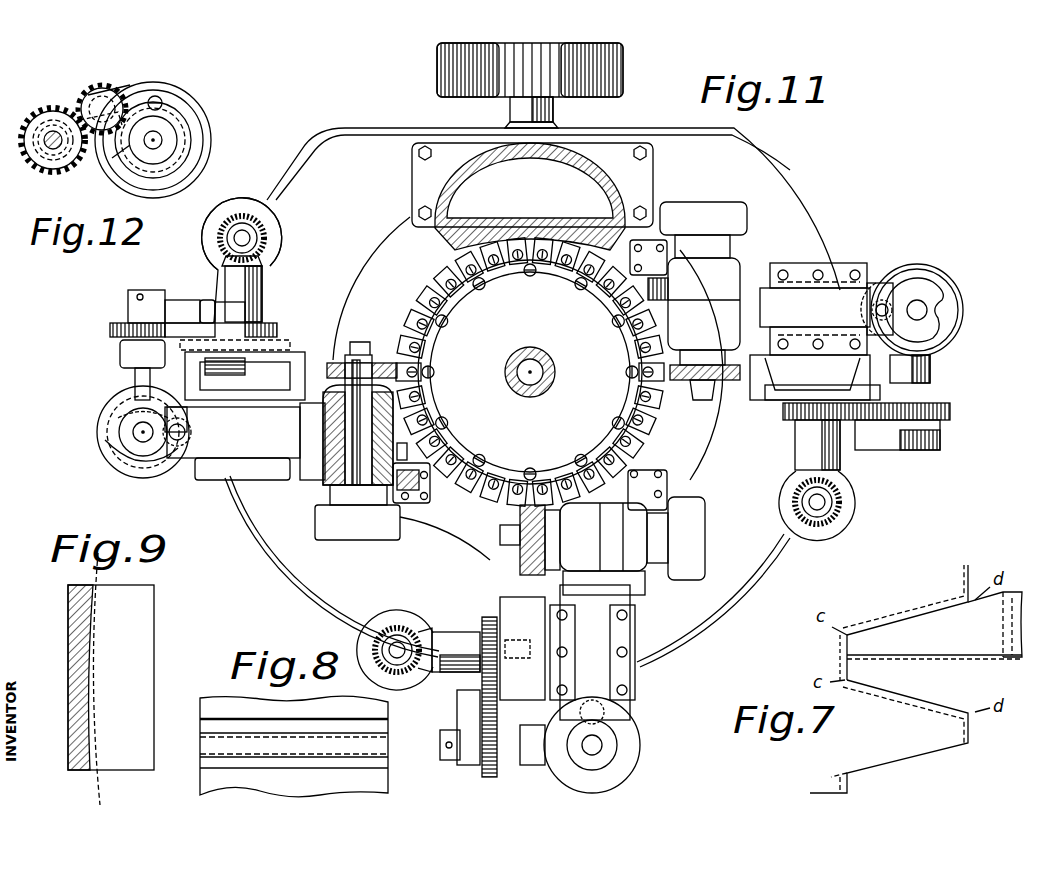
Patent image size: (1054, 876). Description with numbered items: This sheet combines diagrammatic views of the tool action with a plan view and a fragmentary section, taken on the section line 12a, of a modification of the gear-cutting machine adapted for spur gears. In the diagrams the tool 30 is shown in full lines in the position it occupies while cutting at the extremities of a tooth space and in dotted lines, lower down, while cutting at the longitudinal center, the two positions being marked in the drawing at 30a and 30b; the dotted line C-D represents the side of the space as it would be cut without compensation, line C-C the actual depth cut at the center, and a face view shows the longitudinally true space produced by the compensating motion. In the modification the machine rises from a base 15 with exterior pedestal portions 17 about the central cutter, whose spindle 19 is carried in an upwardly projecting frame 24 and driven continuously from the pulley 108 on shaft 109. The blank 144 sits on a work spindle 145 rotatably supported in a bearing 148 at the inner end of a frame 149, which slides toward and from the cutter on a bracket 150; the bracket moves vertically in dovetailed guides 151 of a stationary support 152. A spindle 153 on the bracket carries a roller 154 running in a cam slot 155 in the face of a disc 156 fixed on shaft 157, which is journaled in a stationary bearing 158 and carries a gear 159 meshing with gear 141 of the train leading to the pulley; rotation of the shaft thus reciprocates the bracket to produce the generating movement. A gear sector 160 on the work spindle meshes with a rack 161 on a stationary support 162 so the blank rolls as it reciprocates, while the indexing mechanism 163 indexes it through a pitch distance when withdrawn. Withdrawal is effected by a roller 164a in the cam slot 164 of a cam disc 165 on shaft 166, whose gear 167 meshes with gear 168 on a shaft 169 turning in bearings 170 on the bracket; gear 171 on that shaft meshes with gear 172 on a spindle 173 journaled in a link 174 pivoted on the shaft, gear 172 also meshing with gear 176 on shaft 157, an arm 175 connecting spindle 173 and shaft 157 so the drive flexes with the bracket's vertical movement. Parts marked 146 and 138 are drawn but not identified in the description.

In FIG. 11, the pulley 108 is at (438, 60).
In FIG. 11, the shaft 109 is at (509, 112).
In FIG. 11, the upwardly projecting frame 24 is at (594, 163).
In FIG. 11, the base 15 is at (748, 226).
In FIG. 11, the exterior pedestal portions 17 is at (704, 437).
In FIG. 11, the contact disc 146 is at (462, 300).
In FIG. 11, the spindle 19 is at (512, 363).
In FIG. 11, the gear sector 160 is at (424, 413).
In FIG. 11, the rack 161 is at (430, 447).
In FIG. 11, the stationary support 162 is at (430, 494).
In FIG. 11, the indexing mechanism 163 is at (385, 530).
In FIG. 11, the bearing housing lobe 138 is at (252, 232).
In FIG. 11, the gear 141 is at (265, 238).
In FIG. 11, the gear 159 is at (262, 258).
In FIG. 12, the shaft 157 is at (163, 140).
In FIG. 11, the shaft 157 is at (262, 263).
In FIG. 11, the stationary bearing 158 is at (263, 290).
In FIG. 12, the gear 176 is at (112, 160).
In FIG. 11, the gear 176 is at (262, 325).
In FIG. 11, the dovetailed guides 151 is at (272, 352).
In FIG. 11, the stationary support 152 is at (349, 340).
In FIG. 11, the blank 144 is at (336, 360).
In FIG. 11, the work spindle 145 is at (355, 352).
In FIG. 11, the section line 12a is at (358, 348).
In FIG. 12, the gear 172 is at (102, 90).
In FIG. 11, the gear 172 is at (178, 300).
In FIG. 12, the link 174 is at (96, 100).
In FIG. 11, the link 174 is at (168, 298).
In FIG. 12, the arm 175 is at (150, 96).
In FIG. 11, the arm 175 is at (208, 308).
In FIG. 12, the gear 171 is at (50, 120).
In FIG. 11, the gear 171 is at (120, 330).
In FIG. 12, the disc 156 is at (186, 134).
In FIG. 11, the disc 156 is at (122, 350).
In FIG. 11, the bearings 170 is at (135, 375).
In FIG. 12, the shaft 169 is at (57, 150).
In FIG. 11, the shaft 169 is at (130, 398).
In FIG. 11, the gear 168 is at (122, 414).
In FIG. 11, the gear 167 is at (120, 428).
In FIG. 11, the shaft 166 is at (140, 433).
In FIG. 11, the cam disc 165 is at (112, 462).
In FIG. 11, the cam slot 164 is at (140, 470).
In FIG. 11, the roller 164a is at (176, 448).
In FIG. 12, the cam slot 155 is at (192, 118).
In FIG. 11, the cam slot 155 is at (188, 410).
In FIG. 11, the frame 149 is at (192, 440).
In FIG. 11, the bracket 150 is at (265, 470).
In FIG. 11, the spindle 153 is at (290, 378).
In FIG. 12, the roller 154 is at (163, 103).
In FIG. 11, the roller 154 is at (218, 372).
In FIG. 11, the bearing 148 is at (322, 417).
In FIG. 12, the spindle 173 is at (115, 88).
In FIG. 9, the tool 30 is at (70, 605).
In FIG. 7, the tool 30 is at (990, 646).
In FIG. 8, the strip upper edge 30a is at (205, 712).
In FIG. 7, the strip upper edge 30a is at (937, 560).
In FIG. 8, the strip lower edge 30b is at (208, 778).
In FIG. 7, the strip lower edge 30b is at (972, 738).